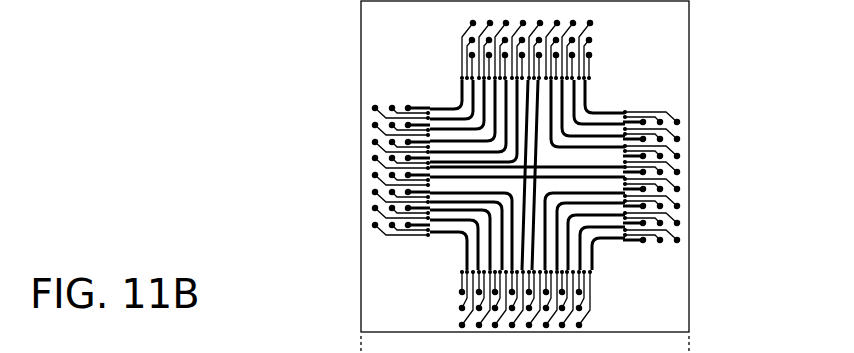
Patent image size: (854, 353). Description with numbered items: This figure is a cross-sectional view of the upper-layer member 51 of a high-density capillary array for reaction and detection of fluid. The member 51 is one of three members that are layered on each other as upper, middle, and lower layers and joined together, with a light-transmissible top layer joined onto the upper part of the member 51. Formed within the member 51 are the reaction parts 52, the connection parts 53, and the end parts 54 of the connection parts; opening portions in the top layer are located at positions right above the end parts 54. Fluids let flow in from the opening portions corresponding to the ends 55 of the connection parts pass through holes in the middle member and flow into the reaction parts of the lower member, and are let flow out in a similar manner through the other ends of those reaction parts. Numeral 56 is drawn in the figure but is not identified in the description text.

The member 51 is at (690, 40).
The reaction parts 52 is at (618, 112).
The connection parts 53 is at (598, 43).
The end parts of the connection parts 54 is at (596, 33).
The ends of the connection parts 55 is at (592, 57).
The via 56 is at (590, 77).